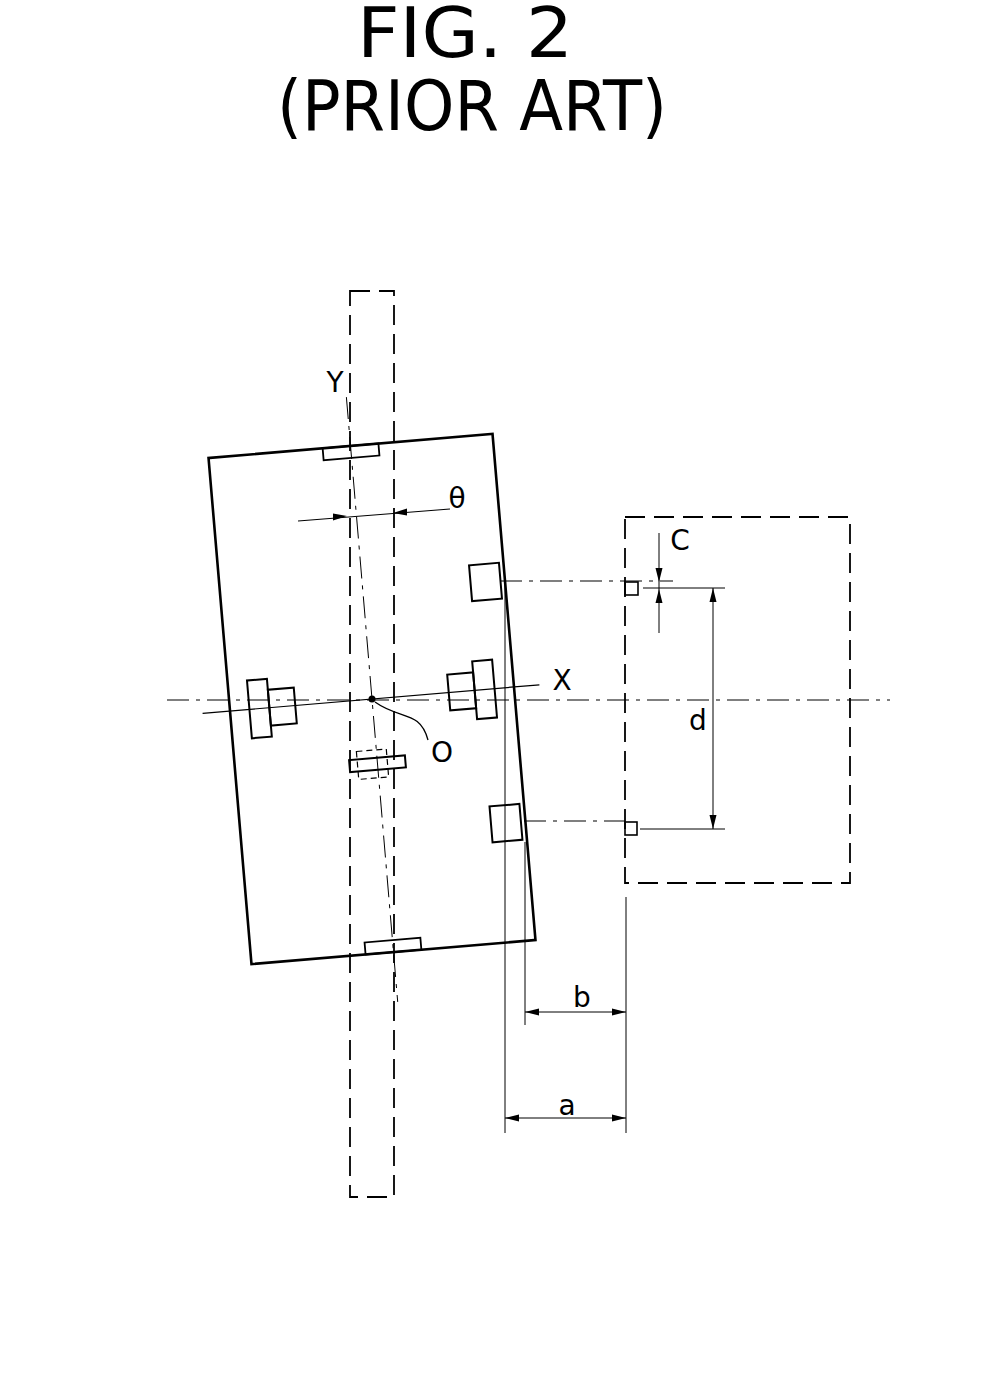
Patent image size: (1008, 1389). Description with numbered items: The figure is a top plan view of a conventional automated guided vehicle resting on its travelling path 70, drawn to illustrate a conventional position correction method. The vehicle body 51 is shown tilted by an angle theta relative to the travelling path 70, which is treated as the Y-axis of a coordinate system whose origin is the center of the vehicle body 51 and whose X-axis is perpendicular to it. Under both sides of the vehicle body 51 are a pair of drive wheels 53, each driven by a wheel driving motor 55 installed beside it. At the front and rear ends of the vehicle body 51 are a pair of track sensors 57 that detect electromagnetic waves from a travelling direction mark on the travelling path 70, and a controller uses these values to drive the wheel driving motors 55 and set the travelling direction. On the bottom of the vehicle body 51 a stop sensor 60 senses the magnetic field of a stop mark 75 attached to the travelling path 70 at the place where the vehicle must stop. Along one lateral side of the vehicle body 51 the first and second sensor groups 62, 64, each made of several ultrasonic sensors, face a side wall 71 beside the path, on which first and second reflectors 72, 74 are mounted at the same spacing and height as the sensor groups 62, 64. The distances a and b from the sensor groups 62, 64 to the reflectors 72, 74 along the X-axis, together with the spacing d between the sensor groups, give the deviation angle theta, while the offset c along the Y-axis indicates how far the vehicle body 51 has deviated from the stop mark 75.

The vehicle body 51 is at (177, 447).
The drive wheels 53 is at (475, 662).
The wheel driving motors 55 is at (446, 675).
The track sensors 57 is at (333, 452).
The stop sensor 60 is at (351, 763).
The first sensor group 62 is at (498, 585).
The second sensor group 64 is at (513, 835).
The travelling path 70 is at (380, 348).
The side wall 71 is at (765, 517).
The first reflector 72 is at (633, 586).
The second reflector 74 is at (633, 836).
The stop mark 75 is at (365, 778).